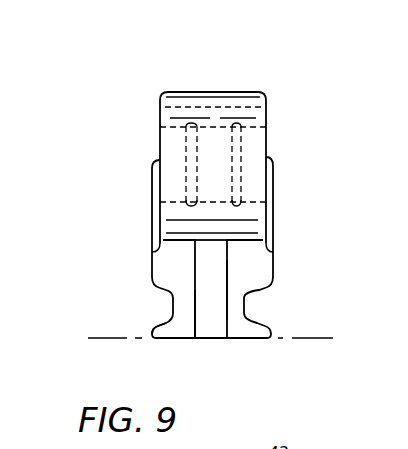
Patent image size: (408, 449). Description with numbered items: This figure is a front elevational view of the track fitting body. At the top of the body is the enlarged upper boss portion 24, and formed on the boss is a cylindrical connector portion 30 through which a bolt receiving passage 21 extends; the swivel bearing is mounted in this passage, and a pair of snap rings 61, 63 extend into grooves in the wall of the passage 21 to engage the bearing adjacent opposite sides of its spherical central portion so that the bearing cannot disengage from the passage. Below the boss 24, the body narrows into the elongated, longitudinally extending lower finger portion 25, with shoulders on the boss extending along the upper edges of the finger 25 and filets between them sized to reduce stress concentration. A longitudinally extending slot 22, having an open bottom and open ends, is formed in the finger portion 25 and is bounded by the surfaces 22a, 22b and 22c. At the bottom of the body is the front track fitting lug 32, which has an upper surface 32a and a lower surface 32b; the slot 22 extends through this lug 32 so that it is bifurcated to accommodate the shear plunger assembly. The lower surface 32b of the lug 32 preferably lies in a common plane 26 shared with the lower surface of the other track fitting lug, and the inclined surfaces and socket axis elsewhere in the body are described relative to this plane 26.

The cylindrical connector portion 30 is at (248, 97).
The upper boss portion 24 is at (160, 146).
The bolt receiving passage 21 is at (246, 155).
The snap ring 63 is at (195, 172).
The snap ring 61 is at (242, 181).
The longitudinally extending slot 22 is at (212, 273).
The slot bounding surface 22a is at (212, 245).
The slot bounding surface 22b is at (221, 289).
The slot bounding surface 22c is at (196, 322).
The lower finger portion 25 is at (172, 298).
The front track fitting lug 32 is at (262, 328).
The upper surface of track fitting lug 32a is at (153, 323).
The lower surface of track fitting lug 32b is at (250, 342).
The common plane 26 is at (100, 339).